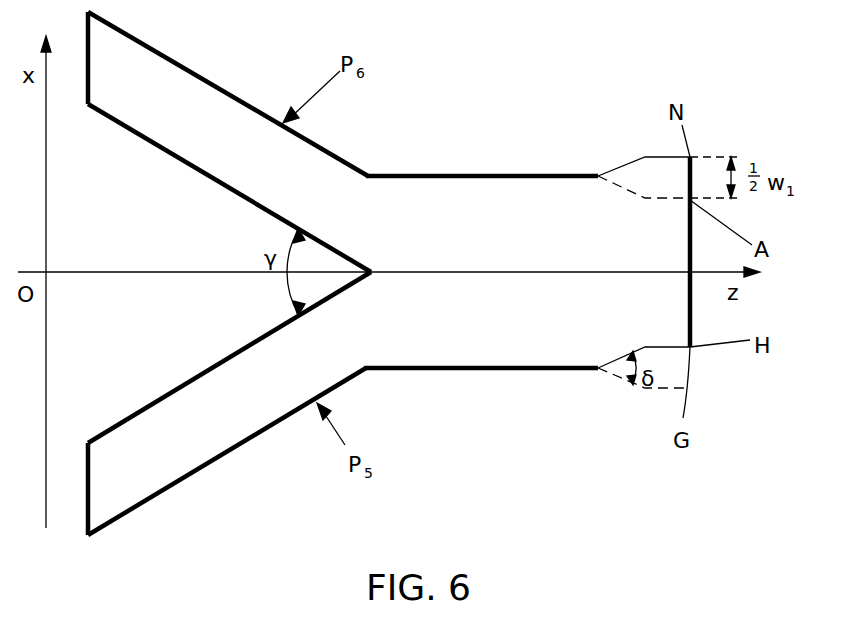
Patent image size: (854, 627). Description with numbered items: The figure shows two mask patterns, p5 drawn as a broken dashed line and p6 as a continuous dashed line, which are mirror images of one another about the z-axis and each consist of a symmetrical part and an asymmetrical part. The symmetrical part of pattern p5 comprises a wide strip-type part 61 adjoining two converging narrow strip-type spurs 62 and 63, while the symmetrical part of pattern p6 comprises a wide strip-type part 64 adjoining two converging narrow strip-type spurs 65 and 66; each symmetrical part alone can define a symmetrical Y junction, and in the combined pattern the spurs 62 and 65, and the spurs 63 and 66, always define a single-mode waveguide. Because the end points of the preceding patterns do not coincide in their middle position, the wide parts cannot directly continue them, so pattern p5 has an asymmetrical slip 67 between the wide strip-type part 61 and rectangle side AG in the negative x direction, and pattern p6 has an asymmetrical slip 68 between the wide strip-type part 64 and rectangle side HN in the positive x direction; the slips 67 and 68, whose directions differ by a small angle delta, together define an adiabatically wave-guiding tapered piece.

The wide strip-type part 61 is at (525, 327).
The narrow strip-type spur 62 is at (197, 150).
The narrow strip-type spur 63 is at (260, 400).
The wide strip-type part 64 is at (520, 208).
The narrow strip-type spur 65 is at (240, 122).
The narrow strip-type spur 66 is at (200, 410).
The asymmetrical slip 67 is at (677, 368).
The asymmetrical slip 68 is at (660, 173).